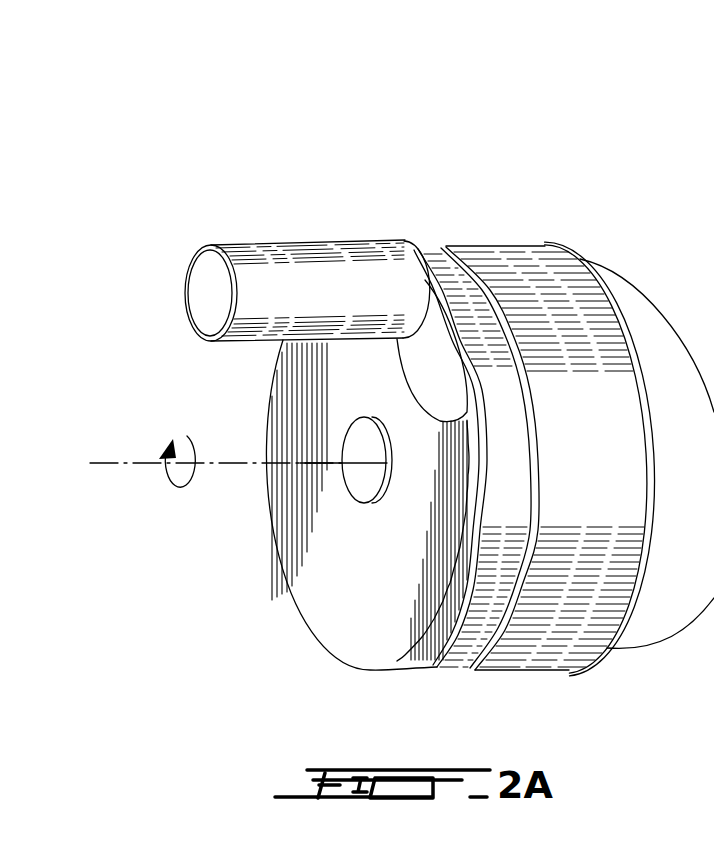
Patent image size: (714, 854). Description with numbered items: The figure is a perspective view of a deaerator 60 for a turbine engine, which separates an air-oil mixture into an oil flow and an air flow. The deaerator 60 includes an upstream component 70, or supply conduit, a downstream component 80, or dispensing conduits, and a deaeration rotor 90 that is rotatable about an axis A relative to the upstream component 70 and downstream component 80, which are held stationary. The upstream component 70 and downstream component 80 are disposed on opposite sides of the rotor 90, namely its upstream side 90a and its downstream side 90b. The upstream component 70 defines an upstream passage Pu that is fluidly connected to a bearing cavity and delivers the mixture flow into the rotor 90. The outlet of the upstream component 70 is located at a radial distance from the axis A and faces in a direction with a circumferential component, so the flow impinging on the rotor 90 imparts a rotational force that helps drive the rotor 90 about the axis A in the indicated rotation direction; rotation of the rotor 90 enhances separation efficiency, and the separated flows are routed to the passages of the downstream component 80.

The deaerator 60 is at (203, 146).
The upstream passage Pu is at (200, 287).
The upstream component 70 is at (432, 652).
The upstream side 90a is at (390, 233).
The deaeration rotor 90 is at (523, 650).
The downstream side 90b is at (588, 226).
The downstream component 80 is at (645, 633).
The axis A is at (108, 462).